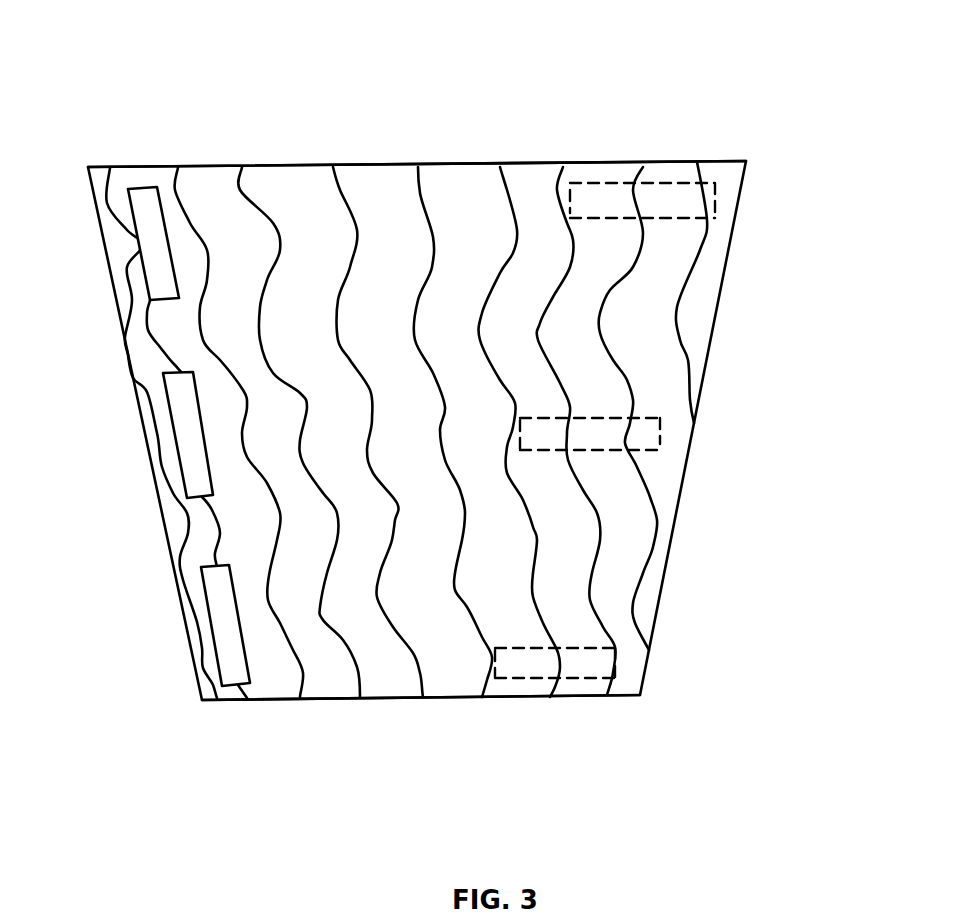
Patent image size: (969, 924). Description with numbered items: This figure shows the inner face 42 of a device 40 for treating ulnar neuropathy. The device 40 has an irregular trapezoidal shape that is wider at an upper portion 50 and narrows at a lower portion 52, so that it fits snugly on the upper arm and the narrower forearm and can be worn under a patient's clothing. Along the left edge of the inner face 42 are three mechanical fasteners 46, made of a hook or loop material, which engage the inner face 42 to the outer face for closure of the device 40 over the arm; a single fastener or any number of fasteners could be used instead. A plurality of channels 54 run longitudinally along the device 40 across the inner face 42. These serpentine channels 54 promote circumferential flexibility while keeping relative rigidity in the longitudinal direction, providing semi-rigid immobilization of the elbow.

The device 40 is at (774, 363).
The inner face 42 is at (272, 182).
The mechanical fasteners 46 is at (143, 245).
The upper portion 50 is at (457, 162).
The lower portion 52 is at (390, 700).
The channels 54 is at (433, 237).